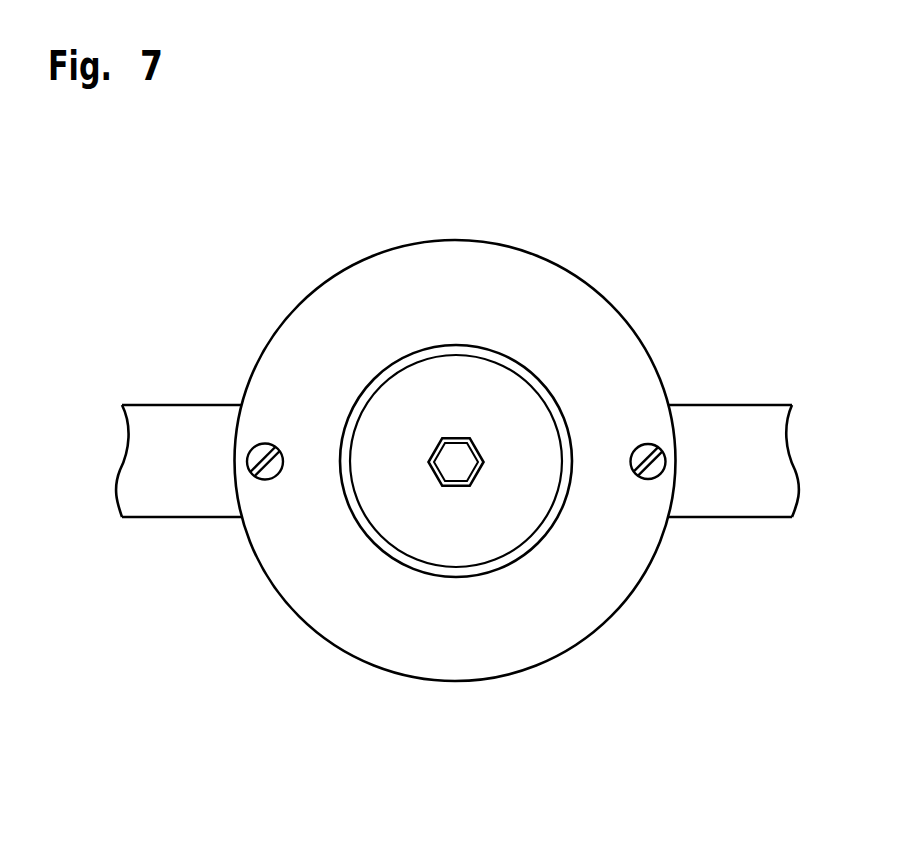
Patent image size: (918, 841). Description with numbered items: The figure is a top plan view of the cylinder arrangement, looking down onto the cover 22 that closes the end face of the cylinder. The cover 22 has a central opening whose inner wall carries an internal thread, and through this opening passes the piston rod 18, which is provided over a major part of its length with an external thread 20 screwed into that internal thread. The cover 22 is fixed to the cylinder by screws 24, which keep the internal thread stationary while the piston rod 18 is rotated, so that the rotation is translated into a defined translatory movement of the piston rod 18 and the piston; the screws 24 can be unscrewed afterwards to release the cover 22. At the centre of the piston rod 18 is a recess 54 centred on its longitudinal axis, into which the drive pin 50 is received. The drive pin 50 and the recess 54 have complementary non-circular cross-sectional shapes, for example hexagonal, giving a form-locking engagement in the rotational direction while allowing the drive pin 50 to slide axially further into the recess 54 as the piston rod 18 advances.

The piston rod 18 is at (423, 405).
The external thread 20 is at (352, 404).
The cover 22 is at (552, 627).
The screws 24 is at (247, 460).
The drive pin 50 is at (468, 452).
The recess 54 is at (457, 433).